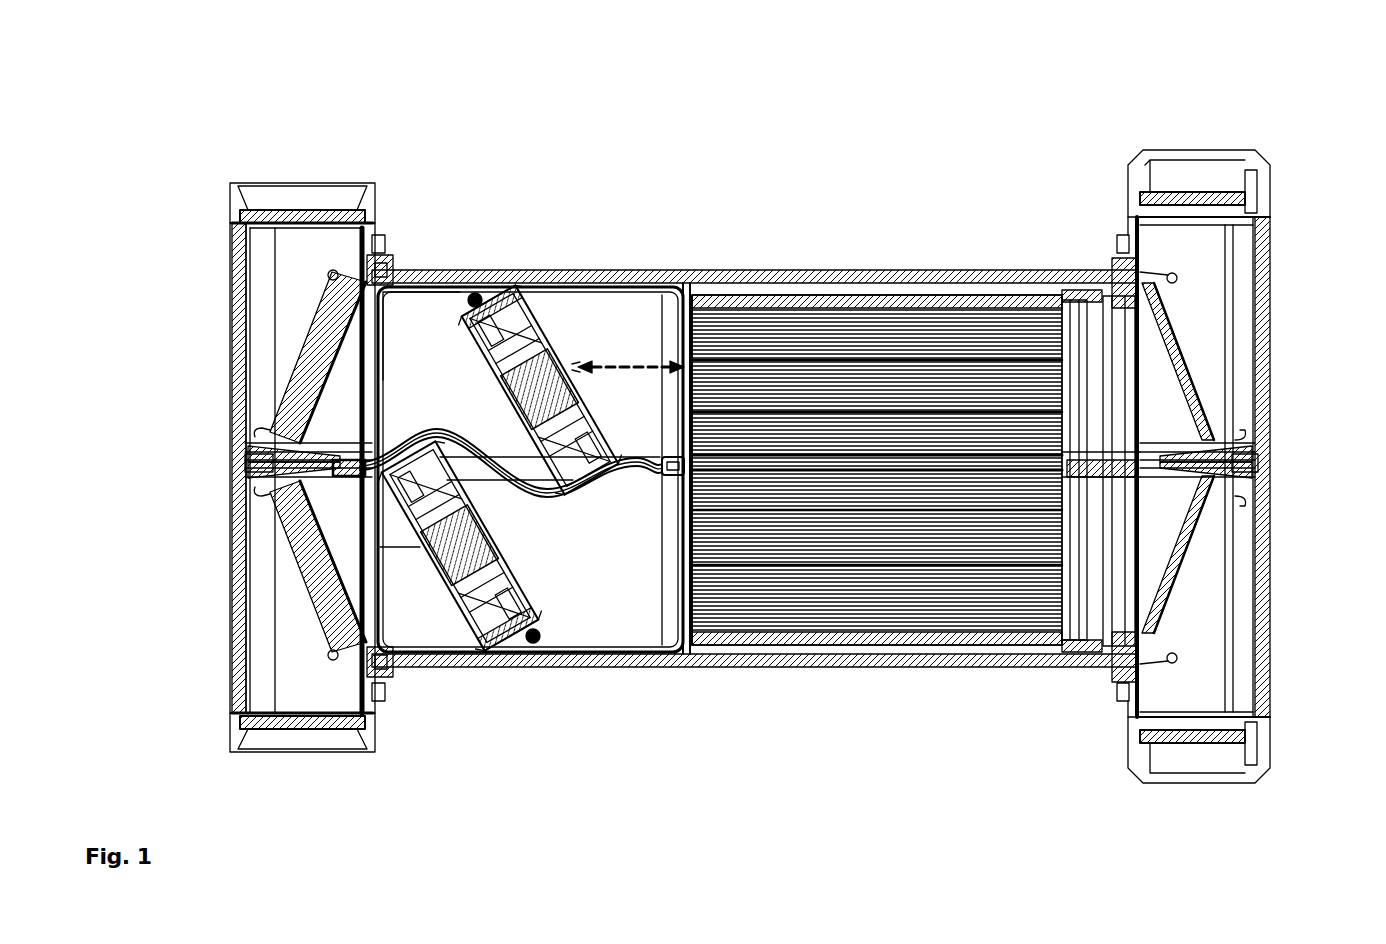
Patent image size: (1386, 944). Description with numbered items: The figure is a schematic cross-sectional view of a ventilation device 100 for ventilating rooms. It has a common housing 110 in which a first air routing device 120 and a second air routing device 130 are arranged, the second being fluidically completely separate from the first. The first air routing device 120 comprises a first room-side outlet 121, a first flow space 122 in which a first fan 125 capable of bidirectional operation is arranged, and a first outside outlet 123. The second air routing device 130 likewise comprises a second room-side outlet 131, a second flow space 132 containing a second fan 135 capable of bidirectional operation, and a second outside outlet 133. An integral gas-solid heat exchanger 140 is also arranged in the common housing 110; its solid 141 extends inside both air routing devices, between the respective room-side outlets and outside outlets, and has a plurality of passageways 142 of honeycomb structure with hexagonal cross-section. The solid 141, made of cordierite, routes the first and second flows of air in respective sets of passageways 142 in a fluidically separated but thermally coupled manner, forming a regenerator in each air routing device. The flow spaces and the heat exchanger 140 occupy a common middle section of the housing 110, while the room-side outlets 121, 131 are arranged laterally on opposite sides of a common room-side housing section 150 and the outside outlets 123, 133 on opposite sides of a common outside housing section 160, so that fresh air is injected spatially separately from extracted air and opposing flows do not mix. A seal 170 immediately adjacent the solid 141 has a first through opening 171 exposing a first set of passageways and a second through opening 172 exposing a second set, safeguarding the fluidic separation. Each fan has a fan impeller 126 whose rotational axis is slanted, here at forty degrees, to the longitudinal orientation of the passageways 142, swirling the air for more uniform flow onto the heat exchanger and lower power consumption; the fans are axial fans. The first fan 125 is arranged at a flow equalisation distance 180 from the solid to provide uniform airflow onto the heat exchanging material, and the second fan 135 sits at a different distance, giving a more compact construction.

The ventilation device 100 is at (1037, 133).
The common housing 110 is at (932, 268).
The first air routing device 120 is at (645, 350).
The first room-side outlet 121 is at (308, 180).
The first flow space 122 is at (463, 352).
The first outside outlet 123 is at (1197, 150).
The first fan 125 is at (550, 358).
The fan impeller 126 is at (510, 300).
The second air routing device 130 is at (647, 592).
The second room-side outlet 131 is at (313, 752).
The second flow space 132 is at (554, 600).
The second outside outlet 133 is at (1207, 785).
The second fan 135 is at (465, 566).
The gas-solid heat exchanger 140 is at (878, 574).
The solid 141 is at (980, 590).
The passageways 142 is at (757, 632).
The room-side housing section 150 is at (203, 465).
The outside housing section 160 is at (1287, 328).
The seal 170 is at (693, 287).
The first through opening 171 is at (690, 370).
The second through opening 172 is at (684, 556).
The flow equalisation distance 180 is at (617, 366).